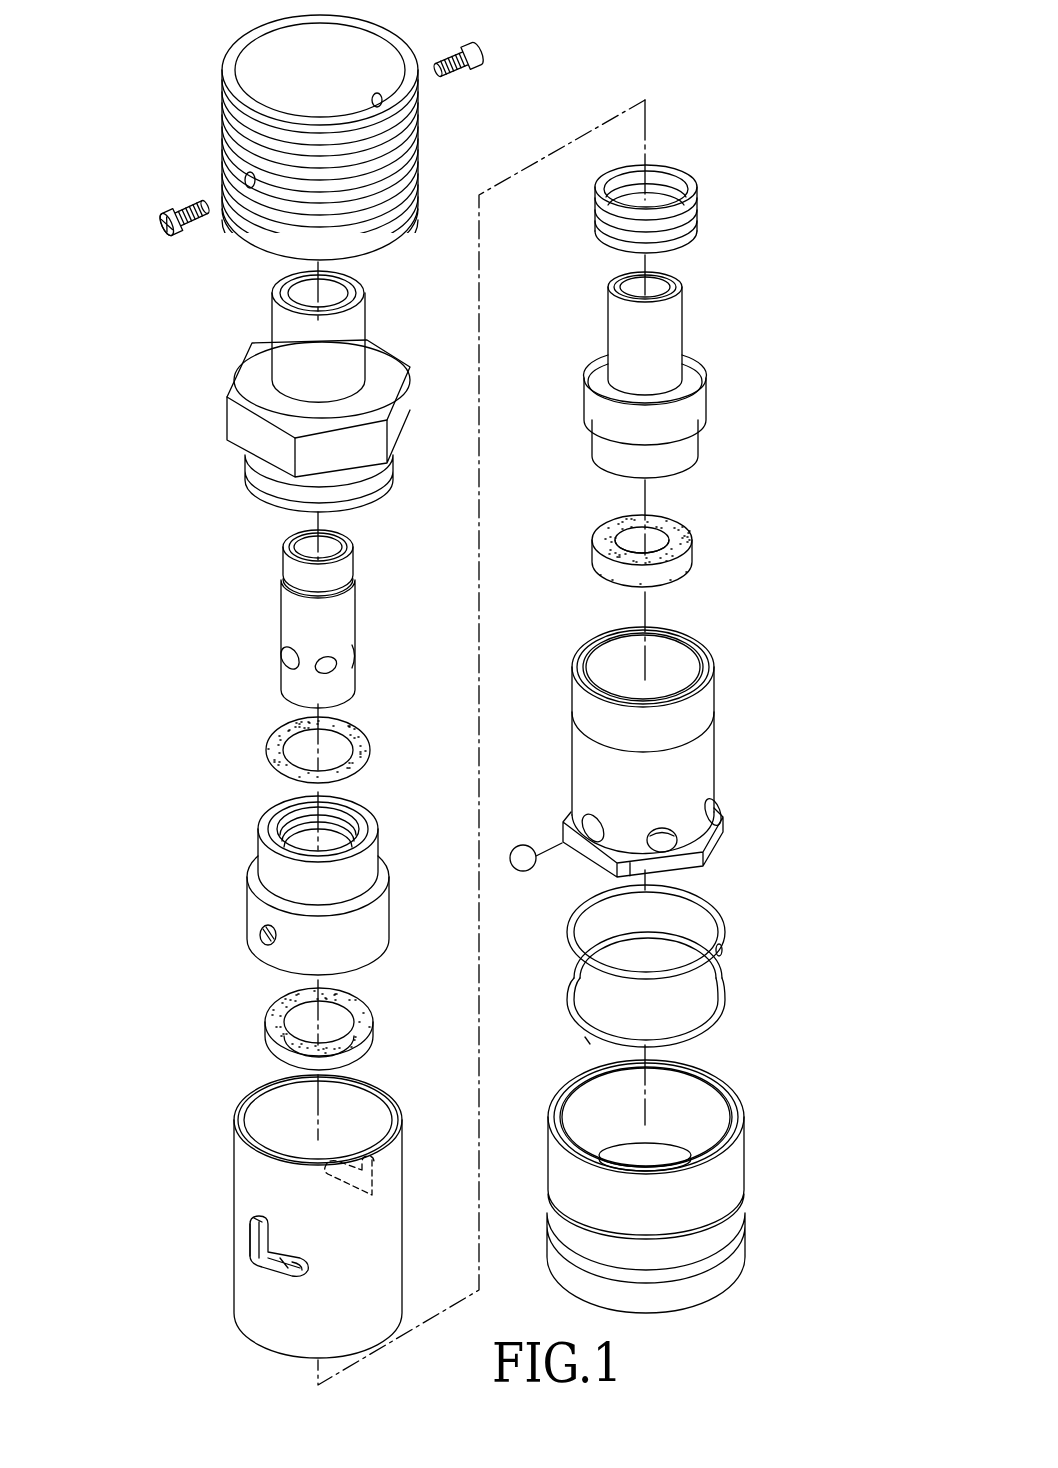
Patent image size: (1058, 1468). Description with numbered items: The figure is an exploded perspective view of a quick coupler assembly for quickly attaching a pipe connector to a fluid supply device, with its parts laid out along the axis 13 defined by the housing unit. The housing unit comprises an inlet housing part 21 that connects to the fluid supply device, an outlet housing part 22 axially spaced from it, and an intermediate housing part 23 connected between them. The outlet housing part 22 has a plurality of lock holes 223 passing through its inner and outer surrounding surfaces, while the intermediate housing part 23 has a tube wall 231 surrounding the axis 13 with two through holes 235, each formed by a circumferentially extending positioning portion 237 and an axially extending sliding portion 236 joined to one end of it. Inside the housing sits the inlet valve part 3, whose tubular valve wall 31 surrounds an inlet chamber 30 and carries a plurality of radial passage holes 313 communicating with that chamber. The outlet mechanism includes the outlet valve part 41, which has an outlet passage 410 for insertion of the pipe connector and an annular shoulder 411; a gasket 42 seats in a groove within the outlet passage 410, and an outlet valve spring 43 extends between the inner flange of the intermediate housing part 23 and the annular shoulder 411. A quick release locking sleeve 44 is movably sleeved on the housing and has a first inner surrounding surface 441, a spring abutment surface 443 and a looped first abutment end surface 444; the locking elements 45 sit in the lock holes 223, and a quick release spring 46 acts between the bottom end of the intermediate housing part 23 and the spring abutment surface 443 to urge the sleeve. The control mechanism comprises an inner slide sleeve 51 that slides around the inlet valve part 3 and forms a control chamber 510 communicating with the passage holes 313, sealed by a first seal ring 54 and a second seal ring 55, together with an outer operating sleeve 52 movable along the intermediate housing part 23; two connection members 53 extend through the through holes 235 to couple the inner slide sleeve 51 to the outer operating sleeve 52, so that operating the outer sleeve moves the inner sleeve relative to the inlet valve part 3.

The axis 13 is at (479, 578).
The inlet housing part 21 is at (258, 432).
The outlet housing part 22 is at (654, 770).
The lock holes 223 is at (668, 847).
The intermediate housing part 23 is at (284, 1220).
The tube wall 231 is at (395, 1123).
The through holes 235 is at (376, 1186).
The sliding portion 236 is at (252, 1237).
The positioning portion 237 is at (282, 1273).
The inlet valve part 3 is at (310, 620).
The inlet chamber 30 is at (320, 560).
The tubular valve wall 31 is at (297, 622).
The passage holes 313 is at (325, 670).
The outlet valve part 41 is at (707, 369).
The outlet passage 410 is at (660, 298).
The annular shoulder 411 is at (692, 384).
The gasket 42 is at (690, 546).
The outlet valve spring 43 is at (694, 200).
The quick release locking sleeve 44 is at (698, 1174).
The first inner surrounding surface 441 is at (697, 1097).
The spring abutment surface 443 is at (690, 1155).
The first abutment end surface 444 is at (733, 1091).
The locking elements 45 is at (523, 845).
The quick release spring 46 is at (717, 955).
The inner slide sleeve 51 is at (296, 885).
The control chamber 510 is at (350, 838).
The outer operating sleeve 52 is at (372, 243).
The connection members 53 is at (486, 53).
The first seal ring 54 is at (357, 1022).
The second seal ring 55 is at (350, 735).